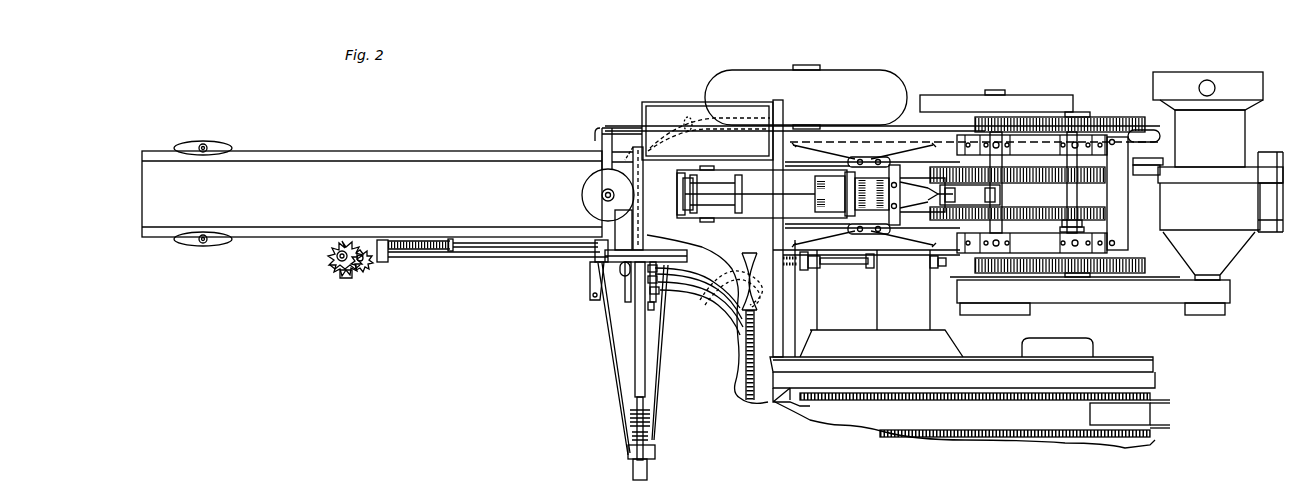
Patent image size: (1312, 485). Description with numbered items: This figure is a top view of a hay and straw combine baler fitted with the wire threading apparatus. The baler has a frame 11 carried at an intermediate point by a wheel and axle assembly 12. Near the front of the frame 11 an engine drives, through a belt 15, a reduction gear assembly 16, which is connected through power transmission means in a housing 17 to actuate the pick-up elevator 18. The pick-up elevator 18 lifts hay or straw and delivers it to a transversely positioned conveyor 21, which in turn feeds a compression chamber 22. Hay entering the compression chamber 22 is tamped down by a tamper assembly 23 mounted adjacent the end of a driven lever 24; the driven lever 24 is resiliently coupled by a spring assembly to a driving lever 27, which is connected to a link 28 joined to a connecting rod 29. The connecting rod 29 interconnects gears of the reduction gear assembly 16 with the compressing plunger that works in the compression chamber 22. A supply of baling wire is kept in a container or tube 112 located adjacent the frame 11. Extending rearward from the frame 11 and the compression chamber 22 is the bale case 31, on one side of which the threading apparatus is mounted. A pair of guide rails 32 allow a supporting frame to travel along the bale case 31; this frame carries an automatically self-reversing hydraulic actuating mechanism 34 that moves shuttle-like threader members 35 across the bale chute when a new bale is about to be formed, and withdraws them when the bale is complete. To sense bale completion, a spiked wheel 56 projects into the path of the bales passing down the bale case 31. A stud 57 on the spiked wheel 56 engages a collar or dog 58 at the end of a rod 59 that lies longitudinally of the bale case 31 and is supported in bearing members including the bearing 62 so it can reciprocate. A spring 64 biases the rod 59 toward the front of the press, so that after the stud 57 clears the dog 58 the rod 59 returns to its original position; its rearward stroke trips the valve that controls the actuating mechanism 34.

The frame 11 is at (1273, 236).
The wheel and axle assembly 12 is at (890, 92).
The belt 15 is at (1143, 292).
The reduction gear assembly 16 is at (1106, 120).
The housing 17 is at (921, 310).
The pick-up elevator 18 is at (1147, 382).
The conveyor 21 is at (763, 397).
The compression chamber 22 is at (660, 150).
The tamper assembly 23 is at (680, 180).
The driven lever 24 is at (753, 218).
The driving lever 27 is at (916, 200).
The link 28 is at (913, 247).
The connecting rod 29 is at (982, 195).
The bale case 31 is at (322, 158).
The guide rails 32 is at (520, 257).
The hydraulic actuating mechanism 34 is at (633, 468).
The threader members 35 is at (638, 340).
The spiked wheel 56 is at (328, 268).
The stud 57 is at (364, 262).
The dog 58 is at (346, 249).
The rod 59 is at (480, 245).
The bearing member 62 is at (578, 250).
The spring 64 is at (428, 241).
The tube 112 is at (898, 138).